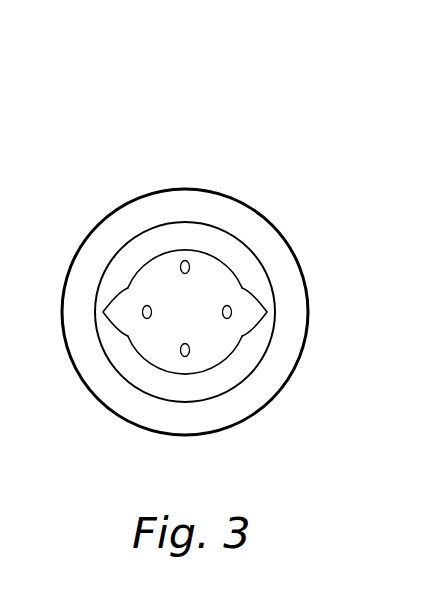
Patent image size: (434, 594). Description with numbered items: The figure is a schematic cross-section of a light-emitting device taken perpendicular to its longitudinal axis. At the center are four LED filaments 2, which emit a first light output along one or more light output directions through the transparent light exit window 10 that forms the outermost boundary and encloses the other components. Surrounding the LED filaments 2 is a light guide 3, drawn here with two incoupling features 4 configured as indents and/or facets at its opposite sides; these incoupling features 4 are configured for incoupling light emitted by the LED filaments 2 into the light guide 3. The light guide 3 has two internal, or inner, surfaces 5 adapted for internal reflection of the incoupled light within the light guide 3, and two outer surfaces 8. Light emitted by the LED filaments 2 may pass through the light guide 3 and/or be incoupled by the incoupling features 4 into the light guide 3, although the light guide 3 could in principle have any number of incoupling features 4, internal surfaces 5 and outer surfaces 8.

The LED filaments 2 is at (181, 349).
The light guide 3 is at (229, 243).
The incoupling features 4 is at (272, 298).
The internal surfaces 5 is at (180, 246).
The outer surfaces 8 is at (274, 277).
The transparent light exit window 10 is at (267, 407).